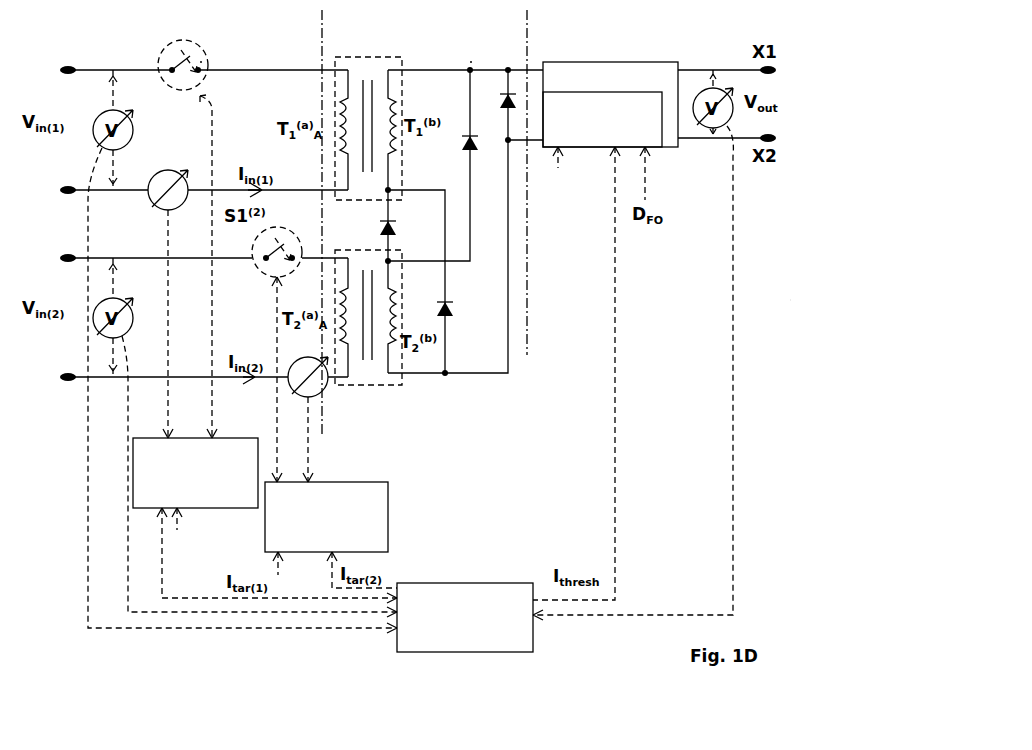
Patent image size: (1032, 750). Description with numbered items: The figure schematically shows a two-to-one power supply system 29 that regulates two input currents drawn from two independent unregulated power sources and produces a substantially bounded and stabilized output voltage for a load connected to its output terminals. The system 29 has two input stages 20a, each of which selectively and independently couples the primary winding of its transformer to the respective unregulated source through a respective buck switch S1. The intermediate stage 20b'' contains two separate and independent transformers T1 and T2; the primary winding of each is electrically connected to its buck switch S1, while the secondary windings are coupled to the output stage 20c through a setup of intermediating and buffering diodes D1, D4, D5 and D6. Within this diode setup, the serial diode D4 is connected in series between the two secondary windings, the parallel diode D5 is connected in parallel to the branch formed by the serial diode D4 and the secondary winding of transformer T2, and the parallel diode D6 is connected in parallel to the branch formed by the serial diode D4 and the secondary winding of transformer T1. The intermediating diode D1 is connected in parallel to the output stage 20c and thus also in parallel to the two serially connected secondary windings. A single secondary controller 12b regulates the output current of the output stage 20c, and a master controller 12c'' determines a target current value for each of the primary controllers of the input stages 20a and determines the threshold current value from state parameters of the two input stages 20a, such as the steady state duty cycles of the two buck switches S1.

The secondary controller 12b is at (662, 132).
The master controller 12c'' is at (419, 627).
The input stage 20a is at (238, 44).
The intermediate stage 20b'' is at (461, 44).
The output stage 20c is at (610, 104).
The power supply system 29 is at (800, 309).
The transformer T1 is at (365, 57).
The transformer T2 is at (380, 385).
The intermediating diode D1 is at (519, 117).
The serial diode D4 is at (401, 234).
The parallel diode D5 is at (458, 323).
The parallel diode D6 is at (482, 160).
The buck switch S1 is at (168, 58).